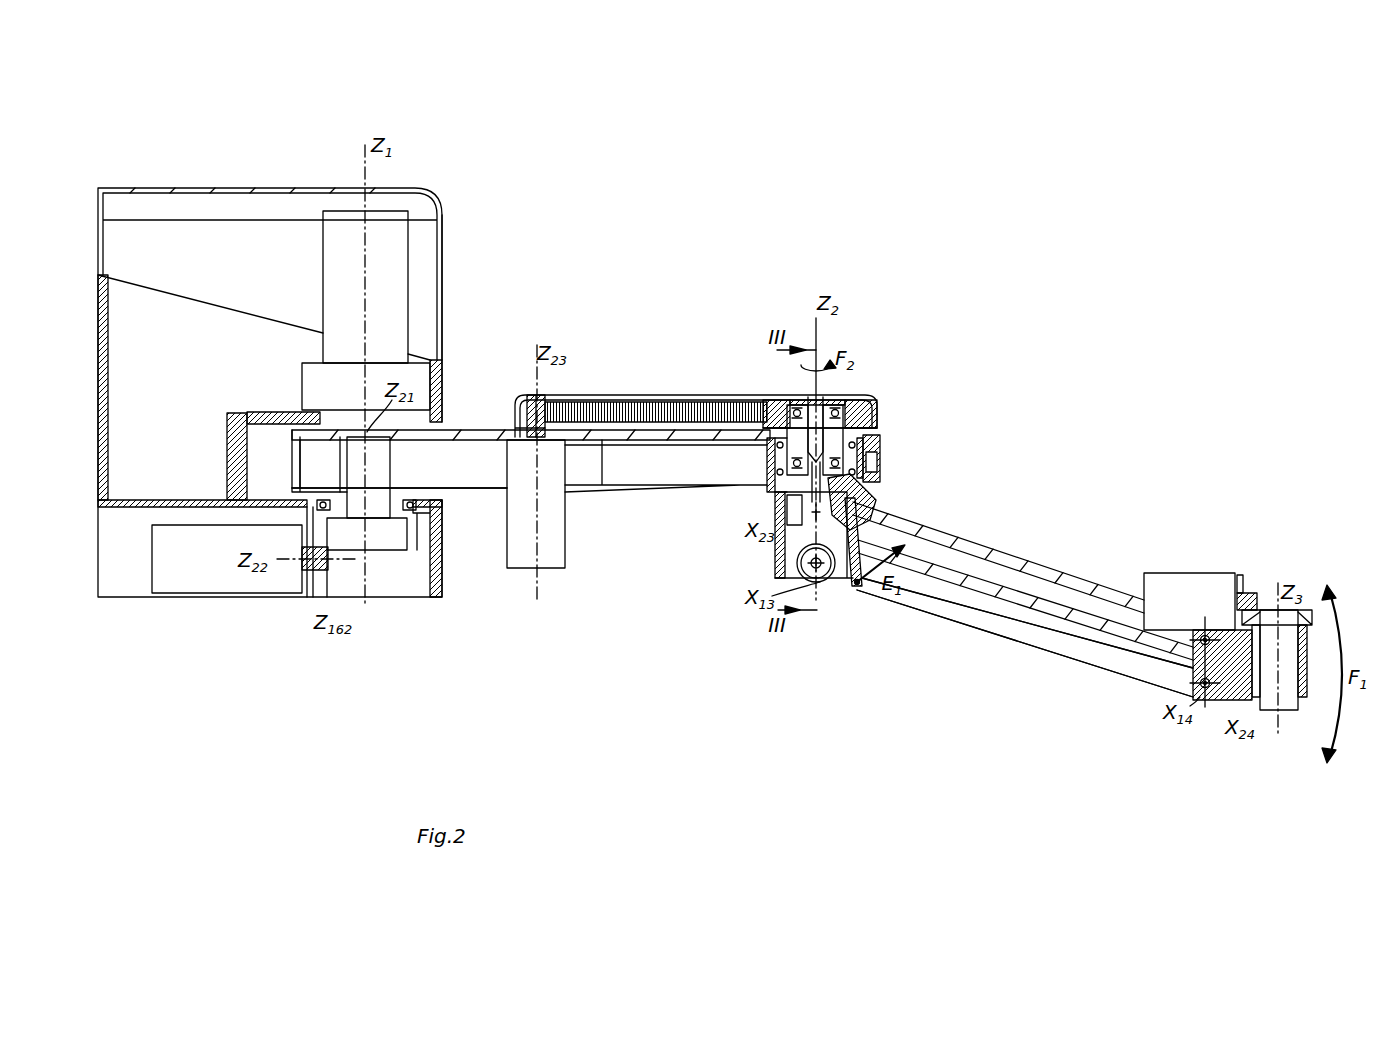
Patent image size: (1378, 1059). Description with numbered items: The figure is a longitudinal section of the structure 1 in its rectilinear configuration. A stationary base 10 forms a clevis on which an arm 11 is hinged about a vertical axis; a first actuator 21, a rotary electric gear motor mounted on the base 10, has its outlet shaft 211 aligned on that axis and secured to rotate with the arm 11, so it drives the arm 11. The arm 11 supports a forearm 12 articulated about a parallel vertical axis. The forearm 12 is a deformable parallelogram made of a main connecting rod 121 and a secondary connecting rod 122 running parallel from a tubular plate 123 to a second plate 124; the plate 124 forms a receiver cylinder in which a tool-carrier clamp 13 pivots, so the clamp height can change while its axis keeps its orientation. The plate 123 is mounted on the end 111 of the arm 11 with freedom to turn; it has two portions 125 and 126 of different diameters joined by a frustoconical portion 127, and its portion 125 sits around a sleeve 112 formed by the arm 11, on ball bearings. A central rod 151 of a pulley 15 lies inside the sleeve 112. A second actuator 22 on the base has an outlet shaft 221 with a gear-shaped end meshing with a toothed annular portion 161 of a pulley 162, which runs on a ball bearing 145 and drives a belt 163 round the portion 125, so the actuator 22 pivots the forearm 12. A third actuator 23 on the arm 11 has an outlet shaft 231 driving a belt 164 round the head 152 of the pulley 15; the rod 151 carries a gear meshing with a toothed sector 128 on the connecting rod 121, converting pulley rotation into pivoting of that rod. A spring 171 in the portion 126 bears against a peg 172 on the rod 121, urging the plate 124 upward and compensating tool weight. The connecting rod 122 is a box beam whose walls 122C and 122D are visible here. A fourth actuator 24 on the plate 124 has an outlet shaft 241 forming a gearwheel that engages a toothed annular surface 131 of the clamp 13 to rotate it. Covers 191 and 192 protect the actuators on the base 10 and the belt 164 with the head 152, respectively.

The structure 1 is at (780, 181).
The base 10 is at (98, 408).
The arm 11 is at (457, 428).
The forearm 12 is at (1068, 430).
The tool-carrier clamp 13 is at (1298, 708).
The pulley 15 is at (882, 394).
The first actuator 21 is at (398, 255).
The second actuator 22 is at (177, 573).
The third actuator 23 is at (548, 556).
The fourth actuator 24 is at (1189, 601).
The end of the arm 111 is at (880, 460).
The sleeve 112 is at (770, 455).
The main connecting rod 121 is at (948, 604).
The secondary connecting rod 122 is at (950, 570).
The wall 122C is at (1072, 582).
The wall 122D is at (1017, 600).
The plate 123 is at (936, 537).
The second plate 124 is at (1187, 667).
The portion of the plate 125 is at (790, 470).
The portion of the plate 126 is at (778, 538).
The frustoconical portion 127 is at (790, 500).
The toothed sector 128 is at (868, 505).
The toothed annular surface 131 is at (1306, 606).
The ball bearing 145 is at (320, 493).
The central rod 151 is at (843, 425).
The head of the pulley 152 is at (850, 393).
The toothed annular portion 161 is at (411, 556).
The pulley 162 is at (383, 492).
The belt 163 is at (460, 471).
The belt 164 is at (640, 405).
The spring 171 is at (827, 585).
The peg 172 is at (860, 592).
The cover 191 is at (442, 280).
The cover 192 is at (713, 395).
The outlet shaft 211 is at (345, 425).
The outlet shaft 221 is at (320, 573).
The outlet shaft 231 is at (567, 415).
The outlet shaft 241 is at (1250, 590).